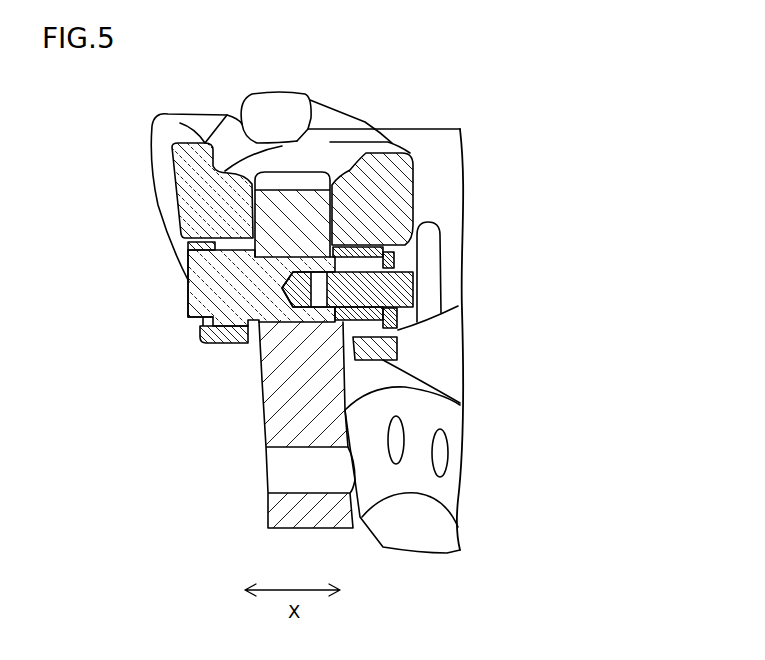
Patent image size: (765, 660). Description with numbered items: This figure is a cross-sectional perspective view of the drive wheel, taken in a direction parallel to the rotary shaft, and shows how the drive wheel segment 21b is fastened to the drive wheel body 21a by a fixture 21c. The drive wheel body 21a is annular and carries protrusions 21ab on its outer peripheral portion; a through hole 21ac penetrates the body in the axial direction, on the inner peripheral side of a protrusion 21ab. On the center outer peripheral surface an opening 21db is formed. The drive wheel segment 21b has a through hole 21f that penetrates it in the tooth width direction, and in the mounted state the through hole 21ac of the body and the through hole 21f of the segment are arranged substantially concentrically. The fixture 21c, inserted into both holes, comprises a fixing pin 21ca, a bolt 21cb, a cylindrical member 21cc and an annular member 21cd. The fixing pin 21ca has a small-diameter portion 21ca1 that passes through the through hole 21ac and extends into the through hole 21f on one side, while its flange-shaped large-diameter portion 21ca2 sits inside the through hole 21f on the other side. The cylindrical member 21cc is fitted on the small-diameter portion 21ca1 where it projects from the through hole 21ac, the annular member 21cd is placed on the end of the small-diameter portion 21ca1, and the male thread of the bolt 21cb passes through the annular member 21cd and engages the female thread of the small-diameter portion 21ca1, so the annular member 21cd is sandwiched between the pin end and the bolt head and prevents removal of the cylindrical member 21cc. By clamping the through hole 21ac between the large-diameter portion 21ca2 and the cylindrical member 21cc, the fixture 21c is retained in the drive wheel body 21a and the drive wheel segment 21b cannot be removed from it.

The drive wheel body 21a is at (455, 450).
The drive wheel segment 21b is at (408, 134).
The protrusion 21ab is at (290, 182).
The opening 21db is at (318, 160).
The through hole 21f is at (185, 224).
The fixture 21c is at (341, 248).
The fixing pin 21ca is at (262, 273).
The small-diameter portion 21ca1 is at (260, 298).
The large-diameter portion 21ca2 is at (233, 328).
The bolt 21cb is at (387, 288).
The cylindrical member 21cc is at (358, 257).
The annular member 21cd is at (390, 252).
The through hole 21ac is at (268, 352).